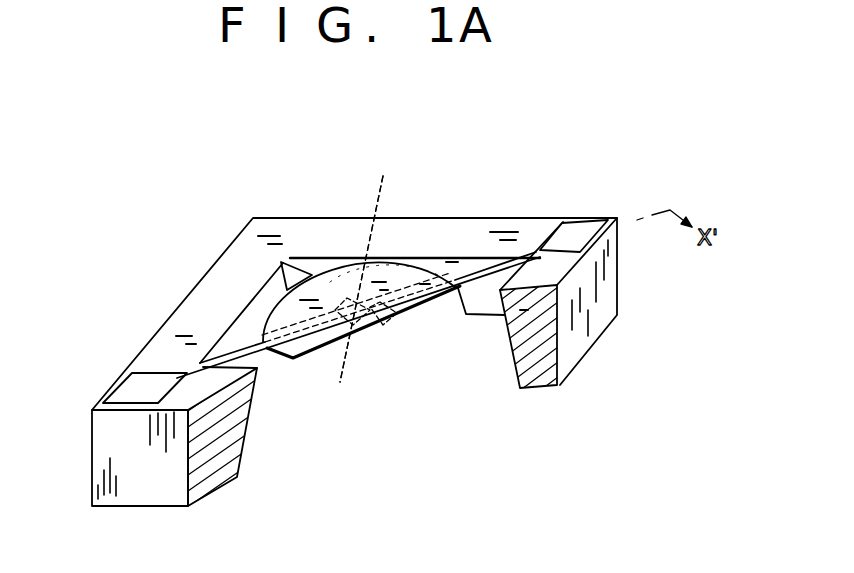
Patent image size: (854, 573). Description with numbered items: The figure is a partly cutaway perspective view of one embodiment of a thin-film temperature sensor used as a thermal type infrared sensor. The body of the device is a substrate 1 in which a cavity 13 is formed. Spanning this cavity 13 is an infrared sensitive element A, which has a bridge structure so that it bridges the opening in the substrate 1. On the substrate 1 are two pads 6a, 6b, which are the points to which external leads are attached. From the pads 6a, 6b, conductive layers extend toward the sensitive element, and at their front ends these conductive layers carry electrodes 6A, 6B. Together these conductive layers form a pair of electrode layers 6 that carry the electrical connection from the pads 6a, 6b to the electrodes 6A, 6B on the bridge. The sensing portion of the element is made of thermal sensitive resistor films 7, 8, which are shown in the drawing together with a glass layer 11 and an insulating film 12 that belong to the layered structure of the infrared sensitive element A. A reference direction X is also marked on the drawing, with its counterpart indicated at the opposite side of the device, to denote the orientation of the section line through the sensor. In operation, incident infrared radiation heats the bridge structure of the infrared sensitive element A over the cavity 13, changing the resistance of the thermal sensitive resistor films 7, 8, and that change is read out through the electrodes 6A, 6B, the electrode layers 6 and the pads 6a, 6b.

The substrate 1 is at (130, 505).
The pair of electrode layers 6 is at (263, 352).
The pad 6a is at (123, 383).
The pad 6b is at (577, 232).
The electrode 6A is at (346, 352).
The electrode 6B is at (410, 322).
The thermal sensitive resistor film 7 is at (373, 266).
The thermal sensitive resistor film 8 is at (360, 290).
The glass layer 11 is at (402, 266).
The insulating film 12 is at (402, 266).
The cavity 13 is at (383, 350).
The infrared sensitive element A is at (323, 255).
The axis X is at (64, 406).